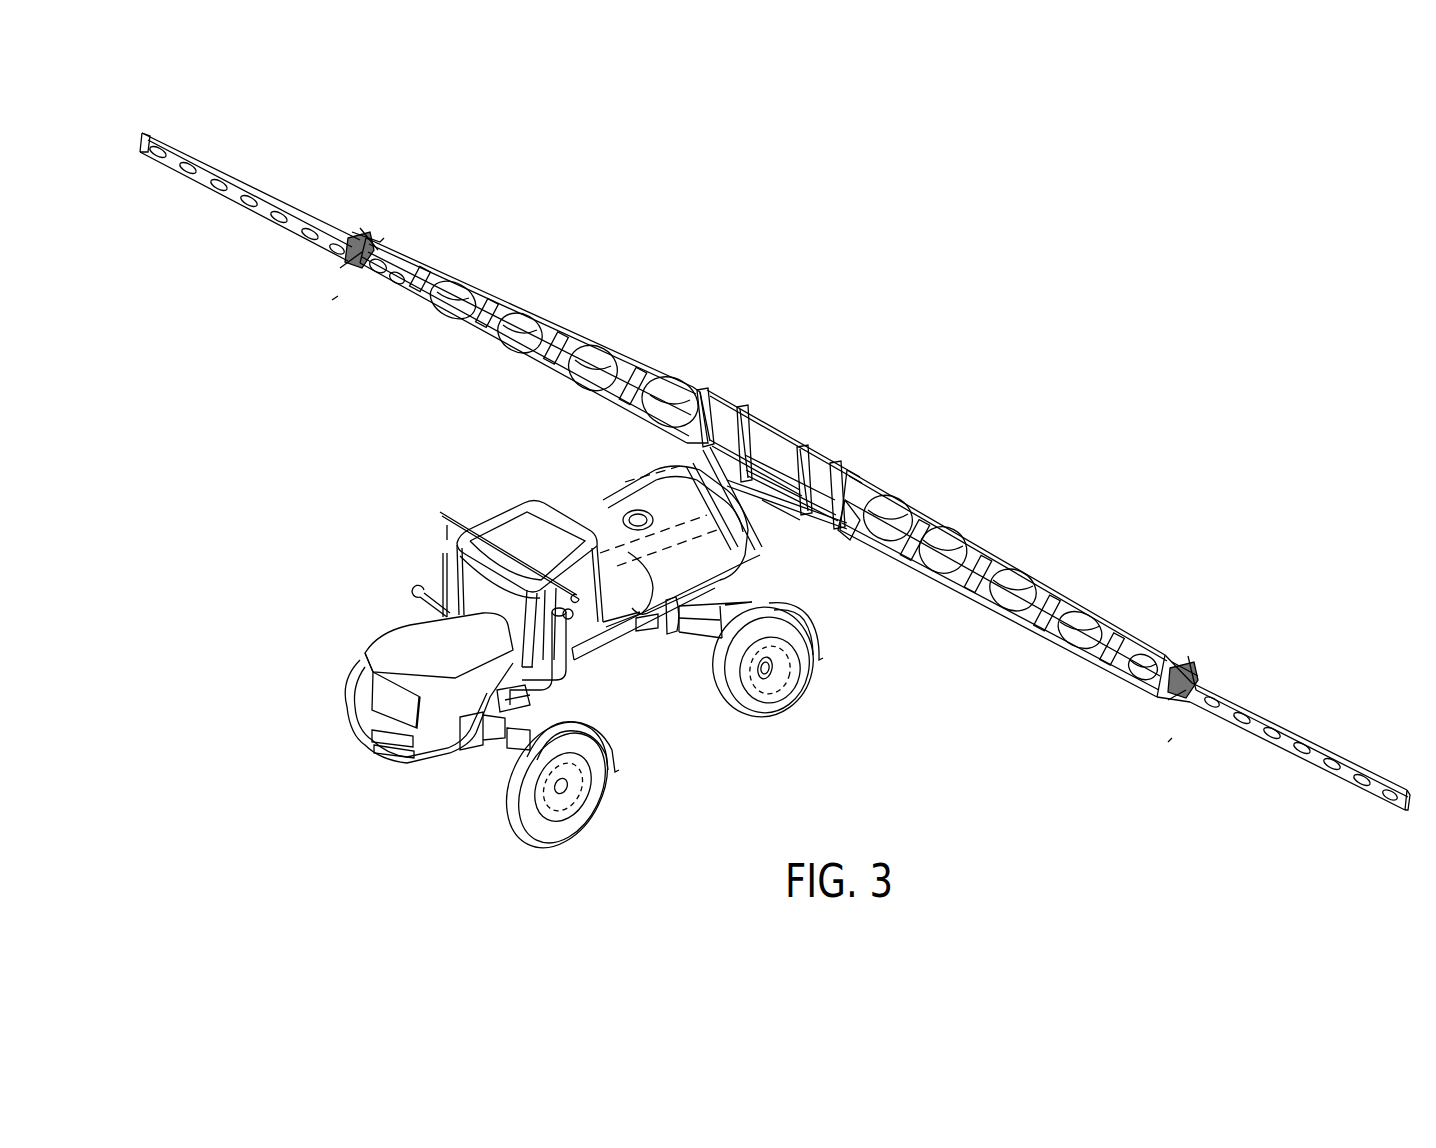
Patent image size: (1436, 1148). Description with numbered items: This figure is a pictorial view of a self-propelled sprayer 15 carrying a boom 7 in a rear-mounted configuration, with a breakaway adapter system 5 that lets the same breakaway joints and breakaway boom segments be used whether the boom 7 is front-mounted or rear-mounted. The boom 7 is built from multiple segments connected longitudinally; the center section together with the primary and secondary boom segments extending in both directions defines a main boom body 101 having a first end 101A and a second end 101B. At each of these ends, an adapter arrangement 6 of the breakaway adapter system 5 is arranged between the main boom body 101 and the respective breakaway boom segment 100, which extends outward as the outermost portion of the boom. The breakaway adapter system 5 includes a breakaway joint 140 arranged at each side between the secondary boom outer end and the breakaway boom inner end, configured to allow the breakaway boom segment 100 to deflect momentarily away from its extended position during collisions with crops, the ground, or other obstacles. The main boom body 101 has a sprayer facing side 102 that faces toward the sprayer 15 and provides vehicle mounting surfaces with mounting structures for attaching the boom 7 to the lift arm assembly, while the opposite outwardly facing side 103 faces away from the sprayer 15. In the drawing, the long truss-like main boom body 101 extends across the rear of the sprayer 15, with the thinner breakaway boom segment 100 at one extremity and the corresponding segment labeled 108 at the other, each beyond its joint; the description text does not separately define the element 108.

The self-propelled sprayer 15 is at (488, 482).
The breakaway boom segment 100 is at (1292, 711).
The main boom body 101 is at (897, 470).
The first end of main boom body 101A is at (425, 243).
The second end of main boom body 101B is at (1178, 638).
The sprayer facing side 102 is at (1012, 645).
The outwardly facing side 103 is at (1040, 549).
The boom tip section 108 is at (280, 168).
The breakaway joint 140 is at (350, 262).
The breakaway adapter system 5 is at (332, 299).
The adapter arrangement 6 is at (353, 280).
The boom 7 is at (638, 338).